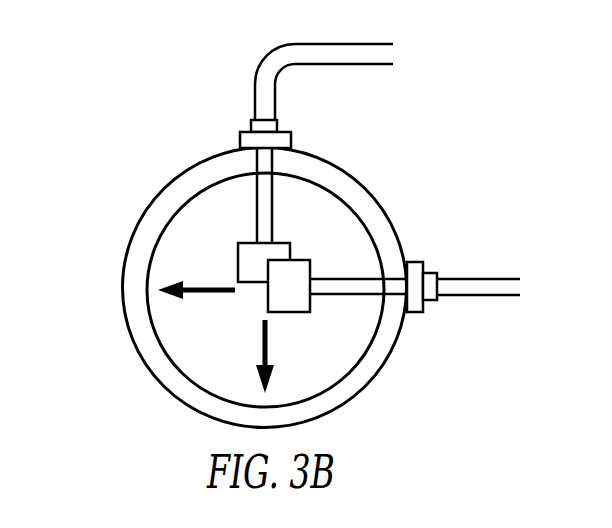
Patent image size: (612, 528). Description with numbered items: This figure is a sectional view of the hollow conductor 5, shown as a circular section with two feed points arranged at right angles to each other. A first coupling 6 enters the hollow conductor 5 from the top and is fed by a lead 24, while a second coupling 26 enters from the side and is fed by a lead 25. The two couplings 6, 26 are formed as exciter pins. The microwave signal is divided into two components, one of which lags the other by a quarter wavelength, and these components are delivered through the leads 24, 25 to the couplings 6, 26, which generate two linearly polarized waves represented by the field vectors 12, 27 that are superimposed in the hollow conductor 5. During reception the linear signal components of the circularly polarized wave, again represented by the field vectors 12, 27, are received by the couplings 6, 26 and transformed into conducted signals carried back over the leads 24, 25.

The hollow conductor 5 is at (148, 225).
The first coupling 6 is at (228, 132).
The field vector 12 is at (273, 352).
The lead 24 is at (355, 52).
The lead 25 is at (483, 290).
The second coupling 26 is at (417, 250).
The field vector 27 is at (202, 295).